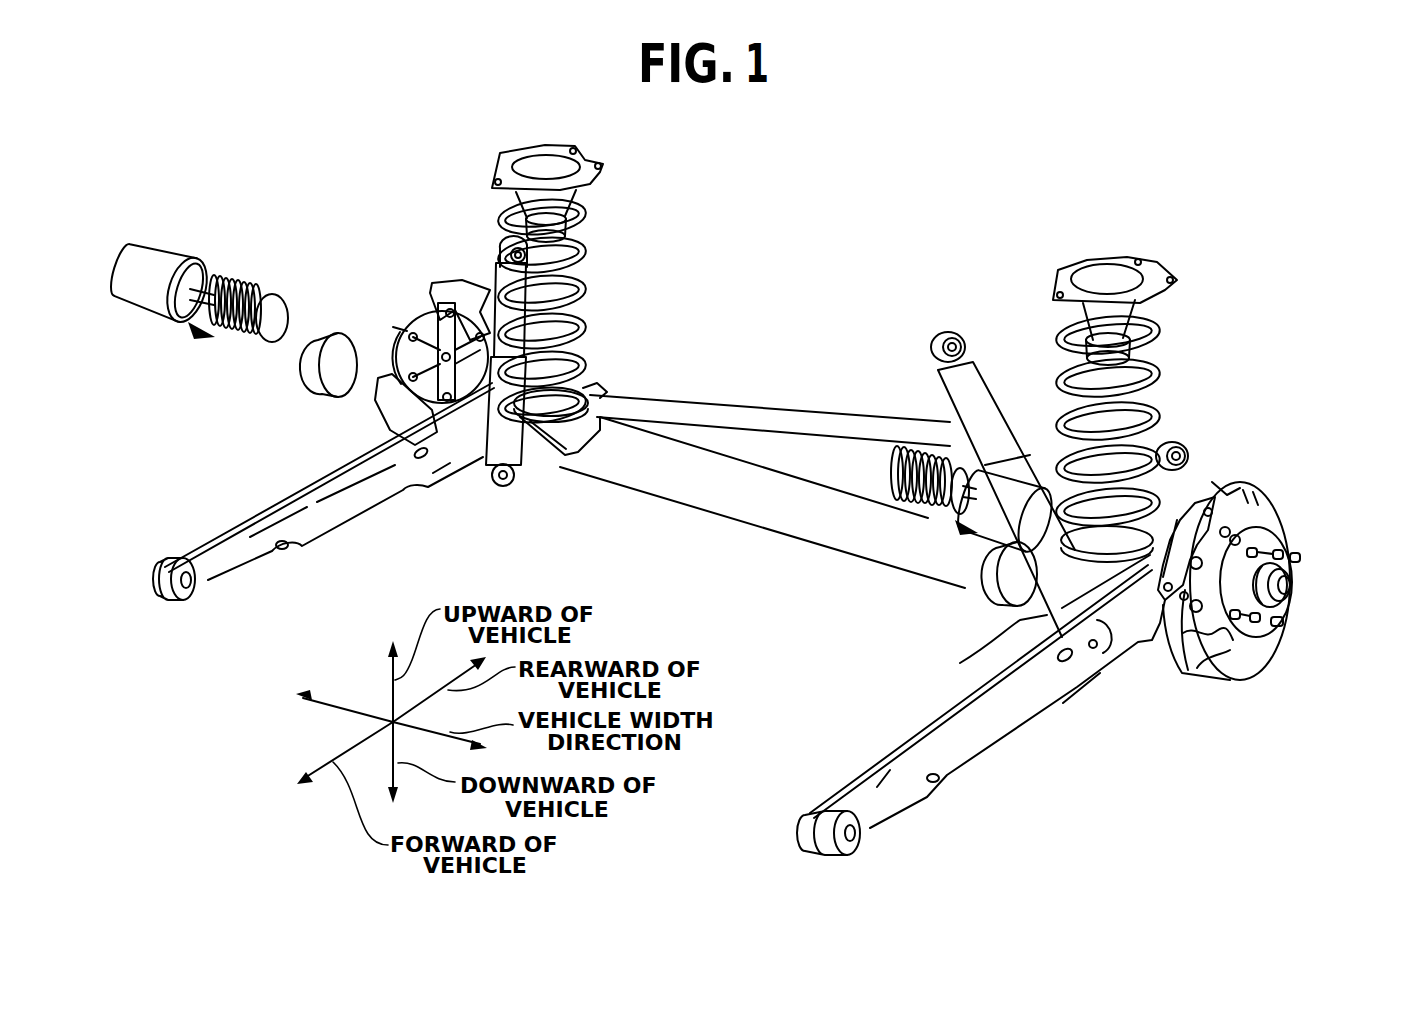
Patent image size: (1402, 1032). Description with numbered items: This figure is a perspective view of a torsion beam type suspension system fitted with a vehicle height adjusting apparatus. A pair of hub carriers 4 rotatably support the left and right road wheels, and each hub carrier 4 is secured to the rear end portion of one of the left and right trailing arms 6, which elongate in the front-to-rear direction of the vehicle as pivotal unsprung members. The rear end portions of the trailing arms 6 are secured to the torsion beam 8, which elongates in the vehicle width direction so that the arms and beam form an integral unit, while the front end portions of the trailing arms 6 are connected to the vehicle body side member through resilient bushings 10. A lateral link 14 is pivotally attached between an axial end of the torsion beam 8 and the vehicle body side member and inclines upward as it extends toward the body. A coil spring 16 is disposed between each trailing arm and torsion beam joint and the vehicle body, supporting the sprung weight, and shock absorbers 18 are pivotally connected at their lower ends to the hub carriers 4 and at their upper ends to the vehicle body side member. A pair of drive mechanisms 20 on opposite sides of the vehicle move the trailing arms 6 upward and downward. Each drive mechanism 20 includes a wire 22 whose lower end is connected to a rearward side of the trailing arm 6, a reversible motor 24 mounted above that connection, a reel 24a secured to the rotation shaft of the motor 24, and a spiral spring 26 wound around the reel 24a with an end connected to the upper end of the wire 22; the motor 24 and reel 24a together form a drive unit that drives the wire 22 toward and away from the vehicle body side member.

The hub carrier 4 is at (423, 310).
The trailing arm 6 is at (218, 533).
The torsion beam 8 is at (757, 507).
The resilient bushing 10 is at (195, 598).
The lateral link 14 is at (755, 410).
The coil spring 16 is at (600, 240).
The shock absorber 18 is at (526, 437).
The drive mechanism 20 is at (293, 257).
The wire 22 is at (363, 400).
The reversible motor 24 is at (163, 263).
The reel 24a is at (237, 332).
The spiral spring 26 is at (300, 338).